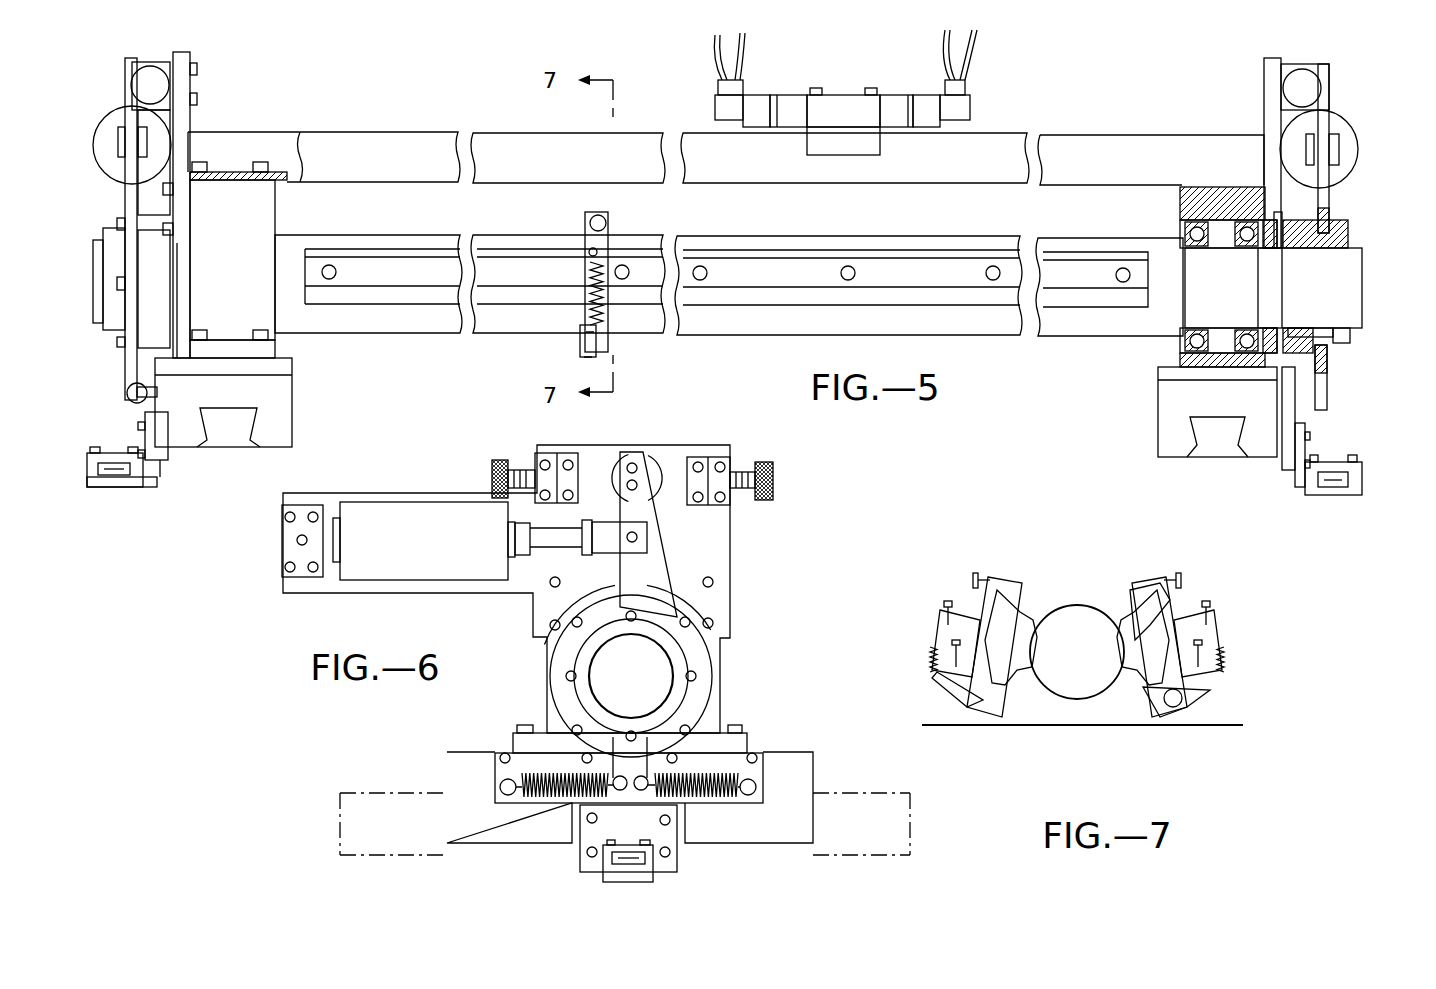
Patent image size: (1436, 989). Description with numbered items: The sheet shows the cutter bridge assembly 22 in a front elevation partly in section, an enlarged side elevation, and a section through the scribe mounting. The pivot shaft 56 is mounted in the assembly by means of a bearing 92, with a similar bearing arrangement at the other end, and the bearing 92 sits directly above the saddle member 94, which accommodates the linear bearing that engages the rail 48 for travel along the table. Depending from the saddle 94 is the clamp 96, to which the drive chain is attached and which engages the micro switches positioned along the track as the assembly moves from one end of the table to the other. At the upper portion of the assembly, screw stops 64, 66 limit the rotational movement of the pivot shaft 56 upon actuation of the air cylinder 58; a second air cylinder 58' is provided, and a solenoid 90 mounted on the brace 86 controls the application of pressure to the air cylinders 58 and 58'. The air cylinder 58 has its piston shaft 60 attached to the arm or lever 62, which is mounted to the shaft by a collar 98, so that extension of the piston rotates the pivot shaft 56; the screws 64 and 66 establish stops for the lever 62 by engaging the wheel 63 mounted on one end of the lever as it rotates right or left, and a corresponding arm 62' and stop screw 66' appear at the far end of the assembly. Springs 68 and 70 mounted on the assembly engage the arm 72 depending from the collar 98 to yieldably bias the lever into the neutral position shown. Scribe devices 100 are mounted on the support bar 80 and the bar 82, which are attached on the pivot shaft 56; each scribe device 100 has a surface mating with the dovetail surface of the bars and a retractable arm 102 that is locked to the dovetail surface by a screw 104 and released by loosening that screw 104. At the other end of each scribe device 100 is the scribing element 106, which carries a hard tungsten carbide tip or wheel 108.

In FIG. 6, the cutter bridge assembly 22 is at (468, 458).
In FIG. 6, the rail 48 is at (355, 800).
In FIG. 5, the pivot shaft 56 is at (1350, 290).
In FIG. 6, the pivot shaft 56 is at (655, 683).
In FIG. 7, the pivot shaft 56 is at (1080, 640).
In FIG. 5, the air cylinder 58 is at (122, 133).
In FIG. 6, the air cylinder 58 is at (395, 520).
In FIG. 5, the air cylinder 58' is at (1347, 149).
In FIG. 6, the piston shaft 60 is at (560, 545).
In FIG. 5, the arm 62 is at (105, 229).
In FIG. 6, the arm 62 is at (649, 458).
In FIG. 5, the belt 62' is at (1369, 107).
In FIG. 6, the wheel 63 is at (603, 450).
In FIG. 6, the screw stop 64 is at (498, 460).
In FIG. 5, the screw stop 66 is at (155, 62).
In FIG. 6, the screw stop 66 is at (763, 462).
In FIG. 5, the idler pulley 66' is at (1316, 63).
In FIG. 6, the spring 68 is at (545, 770).
In FIG. 6, the spring 70 is at (718, 775).
In FIG. 5, the arm 72 is at (1328, 188).
In FIG. 6, the arm 72 is at (637, 763).
In FIG. 5, the support bar 80 is at (541, 268).
In FIG. 7, the support bar 80 is at (1120, 620).
In FIG. 7, the bar 82 is at (1030, 620).
In FIG. 5, the brace 86 is at (995, 140).
In FIG. 6, the brace 86 is at (697, 455).
In FIG. 5, the solenoid 90 is at (852, 95).
In FIG. 5, the bearing 92 is at (1282, 218).
In FIG. 5, the saddle member 94 is at (1170, 400).
In FIG. 6, the saddle member 94 is at (458, 783).
In FIG. 5, the clamp 96 is at (1362, 478).
In FIG. 6, the clamp 96 is at (655, 873).
In FIG. 5, the collar 98 is at (112, 332).
In FIG. 6, the collar 98 is at (575, 660).
In FIG. 5, the scribe device 100 is at (570, 339).
In FIG. 7, the scribe device 100 is at (1080, 647).
In FIG. 7, the retractable arm 102 is at (1132, 600).
In FIG. 7, the screw 104 is at (1183, 584).
In FIG. 7, the scribing element 106 is at (1215, 696).
In FIG. 7, the tip or wheel 108 is at (1160, 722).